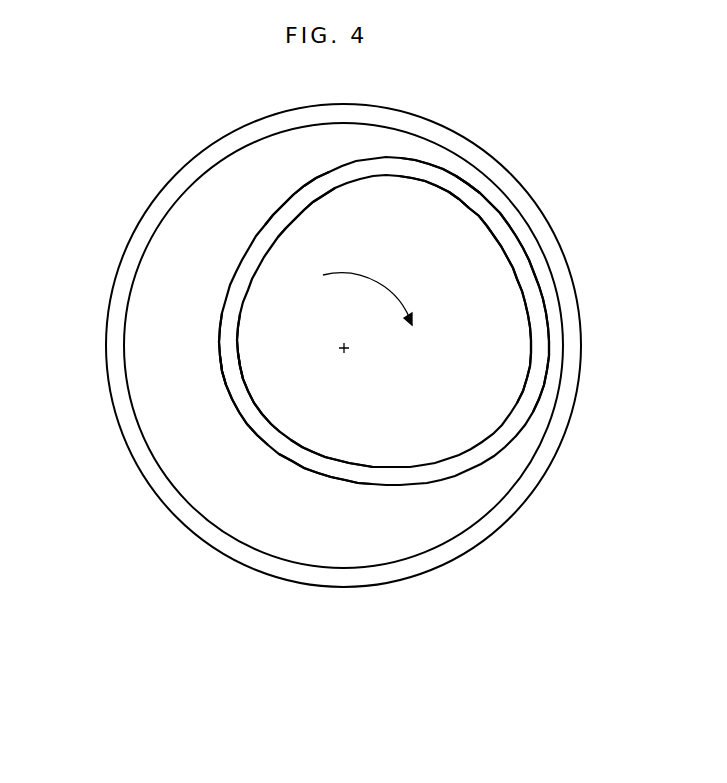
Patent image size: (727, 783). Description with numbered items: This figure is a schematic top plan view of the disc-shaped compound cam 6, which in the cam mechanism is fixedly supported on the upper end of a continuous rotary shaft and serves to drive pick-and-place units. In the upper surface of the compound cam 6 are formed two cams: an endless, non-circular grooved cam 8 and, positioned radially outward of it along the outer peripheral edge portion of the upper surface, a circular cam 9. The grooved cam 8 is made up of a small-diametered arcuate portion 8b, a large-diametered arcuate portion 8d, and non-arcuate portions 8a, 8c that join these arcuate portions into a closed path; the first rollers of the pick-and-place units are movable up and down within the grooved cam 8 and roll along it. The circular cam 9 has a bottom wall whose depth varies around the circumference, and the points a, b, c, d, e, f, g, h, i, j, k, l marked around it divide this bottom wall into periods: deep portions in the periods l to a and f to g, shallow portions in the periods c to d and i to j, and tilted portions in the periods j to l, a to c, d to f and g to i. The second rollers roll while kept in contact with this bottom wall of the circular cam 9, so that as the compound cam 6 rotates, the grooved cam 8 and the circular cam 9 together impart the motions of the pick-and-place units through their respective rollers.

The compound cam 6 is at (468, 558).
The circular cam 9 is at (532, 480).
The grooved cam 8 is at (530, 265).
The non-arcuate portion 8a is at (298, 198).
The small-diametered arcuate portion 8b is at (233, 365).
The non-arcuate portion 8c is at (363, 470).
The large-diametered arcuate portion 8d is at (458, 195).
The period boundary point a is at (278, 428).
The period point b is at (292, 442).
The period boundary point c is at (306, 448).
The period boundary point d is at (520, 388).
The period point e is at (528, 348).
The period boundary point f is at (527, 308).
The period boundary point g is at (468, 207).
The period point h is at (440, 187).
The period boundary point i is at (395, 177).
The period boundary point j is at (240, 325).
The period point k is at (240, 348).
The period boundary point l is at (242, 369).